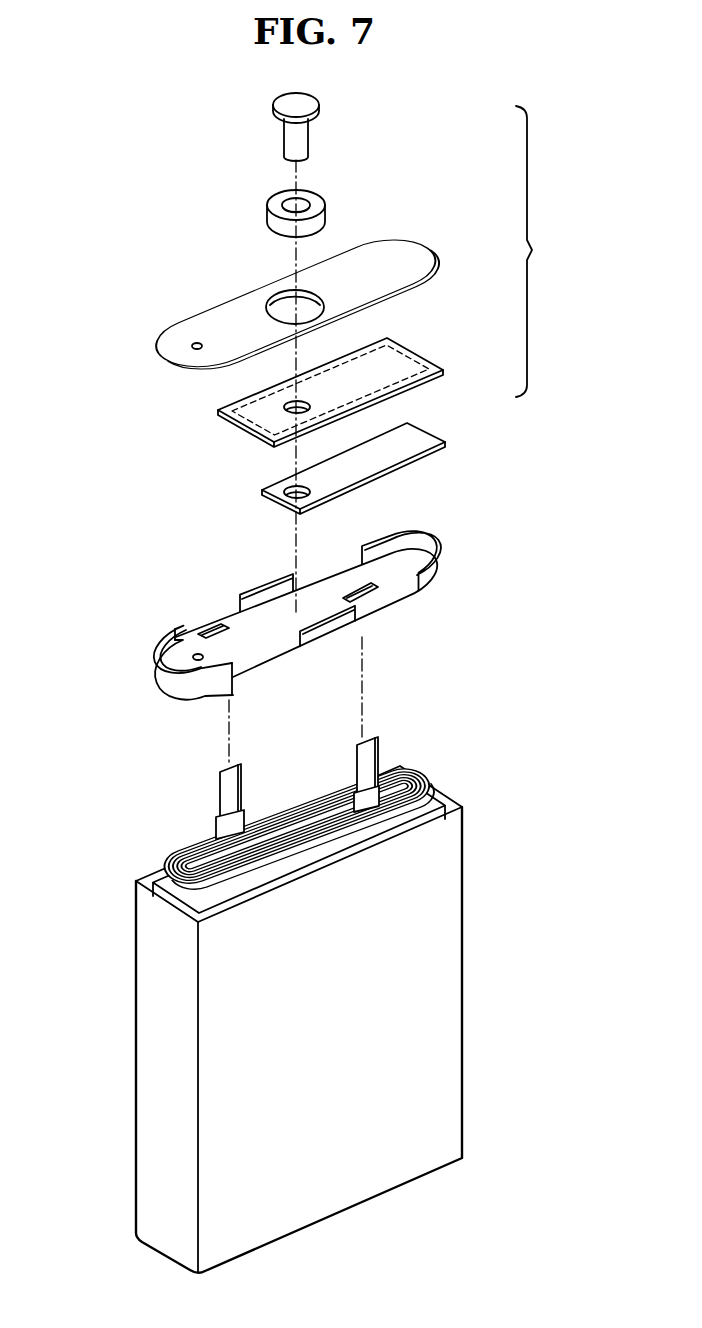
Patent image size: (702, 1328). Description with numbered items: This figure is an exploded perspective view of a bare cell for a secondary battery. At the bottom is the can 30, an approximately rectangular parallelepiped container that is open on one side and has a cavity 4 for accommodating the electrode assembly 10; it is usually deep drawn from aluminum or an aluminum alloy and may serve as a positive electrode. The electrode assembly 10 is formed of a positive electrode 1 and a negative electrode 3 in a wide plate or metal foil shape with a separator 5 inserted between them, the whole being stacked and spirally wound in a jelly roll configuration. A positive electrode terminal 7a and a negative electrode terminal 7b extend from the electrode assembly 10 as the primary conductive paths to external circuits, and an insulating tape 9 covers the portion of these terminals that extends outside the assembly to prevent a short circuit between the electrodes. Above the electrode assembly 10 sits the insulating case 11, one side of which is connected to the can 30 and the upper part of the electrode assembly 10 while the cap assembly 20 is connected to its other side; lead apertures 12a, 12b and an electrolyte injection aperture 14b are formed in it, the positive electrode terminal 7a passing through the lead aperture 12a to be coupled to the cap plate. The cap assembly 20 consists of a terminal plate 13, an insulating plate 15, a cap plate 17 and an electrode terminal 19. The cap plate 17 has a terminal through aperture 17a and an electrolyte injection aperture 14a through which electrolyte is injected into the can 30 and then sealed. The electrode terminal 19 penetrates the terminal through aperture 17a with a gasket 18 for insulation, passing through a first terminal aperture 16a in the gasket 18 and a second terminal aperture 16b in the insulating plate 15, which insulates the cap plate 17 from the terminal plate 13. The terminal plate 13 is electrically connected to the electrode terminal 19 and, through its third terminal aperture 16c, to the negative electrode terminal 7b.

The positive electrode 1 is at (428, 783).
The negative electrode 3 is at (396, 738).
The cavity 4 is at (457, 795).
The separator 5 is at (425, 782).
The positive electrode terminal 7a is at (228, 790).
The negative electrode terminal 7b is at (367, 758).
The insulating tape 9 is at (216, 833).
The electrode assembly 10 is at (333, 793).
The insulating case 11 is at (262, 631).
The lead aperture 12a is at (208, 622).
The lead aperture 12b is at (353, 586).
The terminal plate 13 is at (360, 458).
The electrolyte injection aperture 14a is at (196, 345).
The electrolyte injection aperture 14b is at (185, 660).
The insulating plate 15 is at (346, 389).
The first terminal aperture 16a is at (303, 203).
The second terminal aperture 16b is at (280, 410).
The third terminal aperture 16c is at (277, 500).
The cap plate 17 is at (324, 299).
The terminal through aperture 17a is at (286, 306).
The gasket 18 is at (281, 194).
The electrode terminal 19 is at (303, 105).
The cap assembly 20 is at (540, 251).
The can 30 is at (155, 1047).